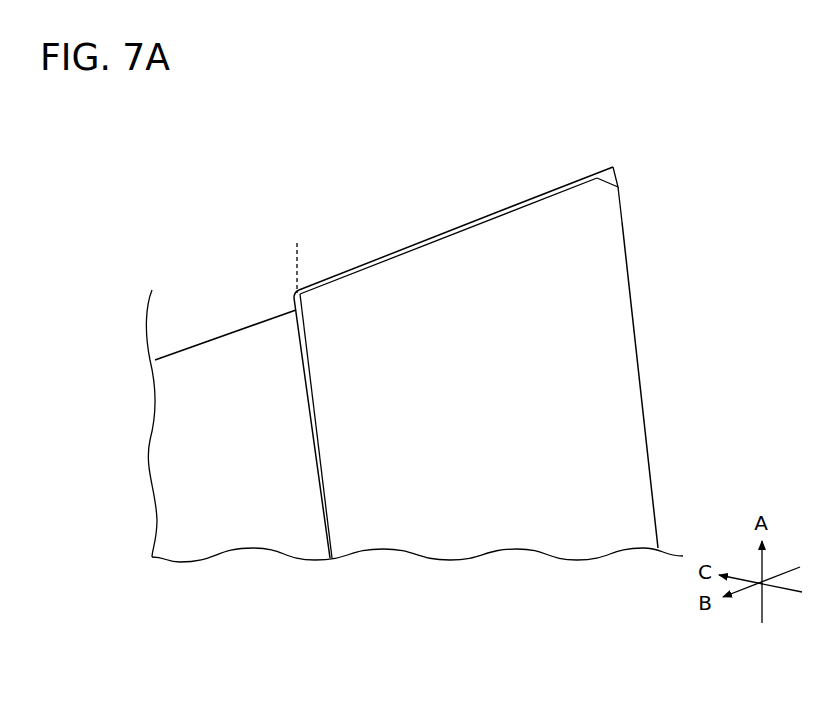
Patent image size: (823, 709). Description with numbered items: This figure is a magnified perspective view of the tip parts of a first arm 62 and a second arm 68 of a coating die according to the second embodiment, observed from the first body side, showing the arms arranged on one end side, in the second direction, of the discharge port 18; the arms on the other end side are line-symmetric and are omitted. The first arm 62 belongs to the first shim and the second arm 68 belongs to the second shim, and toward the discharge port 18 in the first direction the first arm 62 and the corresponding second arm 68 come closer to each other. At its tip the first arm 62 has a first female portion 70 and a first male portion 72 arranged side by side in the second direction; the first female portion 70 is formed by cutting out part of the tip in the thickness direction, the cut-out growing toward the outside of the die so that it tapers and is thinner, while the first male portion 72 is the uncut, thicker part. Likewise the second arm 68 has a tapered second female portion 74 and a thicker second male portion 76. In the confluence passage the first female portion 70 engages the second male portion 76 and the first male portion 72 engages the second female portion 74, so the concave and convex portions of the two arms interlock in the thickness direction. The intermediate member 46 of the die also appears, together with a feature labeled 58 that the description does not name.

The discharge port 18 is at (296, 270).
The intermediate member 46 is at (170, 500).
The bent portion 58 is at (323, 530).
The first arm 62 is at (658, 535).
The second arm 68 is at (548, 191).
The first female portion 70 is at (437, 250).
The first male portion 72 is at (580, 186).
The second female portion 74 is at (598, 169).
The second male portion 76 is at (408, 245).